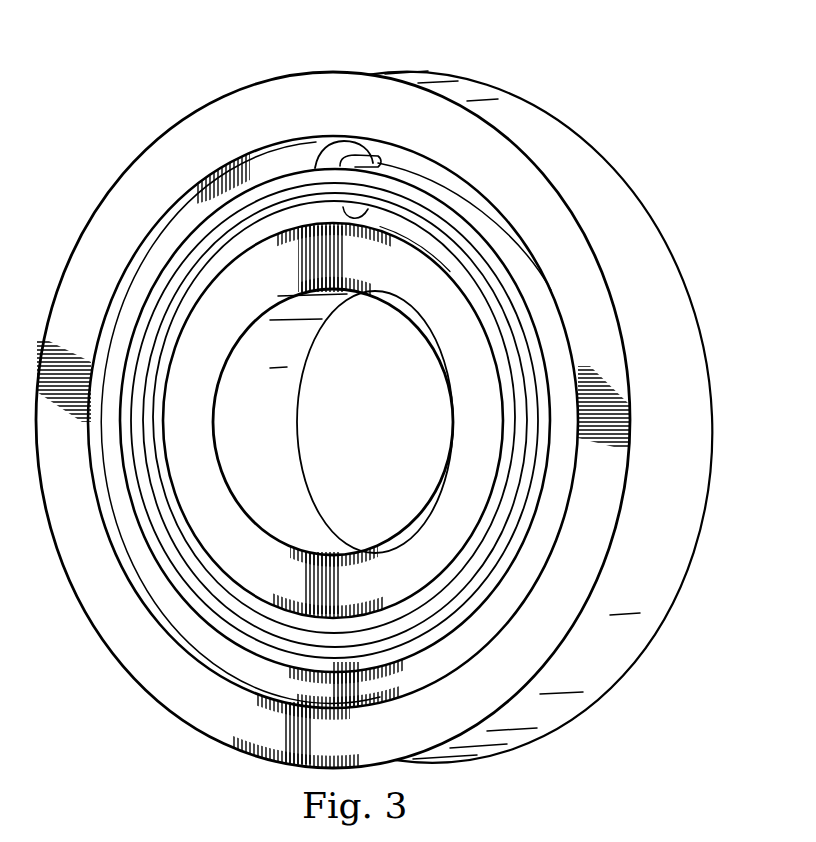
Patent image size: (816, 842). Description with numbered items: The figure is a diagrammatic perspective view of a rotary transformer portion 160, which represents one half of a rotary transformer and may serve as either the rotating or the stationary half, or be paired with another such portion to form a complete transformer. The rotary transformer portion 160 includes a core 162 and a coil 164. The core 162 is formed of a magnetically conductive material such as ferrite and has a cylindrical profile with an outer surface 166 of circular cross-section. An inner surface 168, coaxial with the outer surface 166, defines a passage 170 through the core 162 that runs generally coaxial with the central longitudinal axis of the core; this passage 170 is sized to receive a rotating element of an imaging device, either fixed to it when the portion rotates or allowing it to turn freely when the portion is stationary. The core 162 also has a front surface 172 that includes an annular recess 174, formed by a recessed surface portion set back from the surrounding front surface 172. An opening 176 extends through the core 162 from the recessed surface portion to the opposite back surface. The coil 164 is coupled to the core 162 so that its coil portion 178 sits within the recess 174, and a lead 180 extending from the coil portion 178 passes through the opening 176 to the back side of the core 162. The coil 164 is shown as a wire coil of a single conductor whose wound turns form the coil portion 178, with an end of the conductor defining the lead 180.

The rotary transformer portion 160 is at (176, 60).
The core 162 is at (135, 157).
The coil 164 is at (185, 241).
The outer surface 166 is at (666, 260).
The inner surface 168 is at (298, 474).
The passage 170 is at (408, 359).
The front surface 172 is at (163, 686).
The recess 174 is at (480, 624).
The opening 176 is at (318, 157).
The coil portion 178 is at (462, 215).
The lead 180 is at (353, 152).